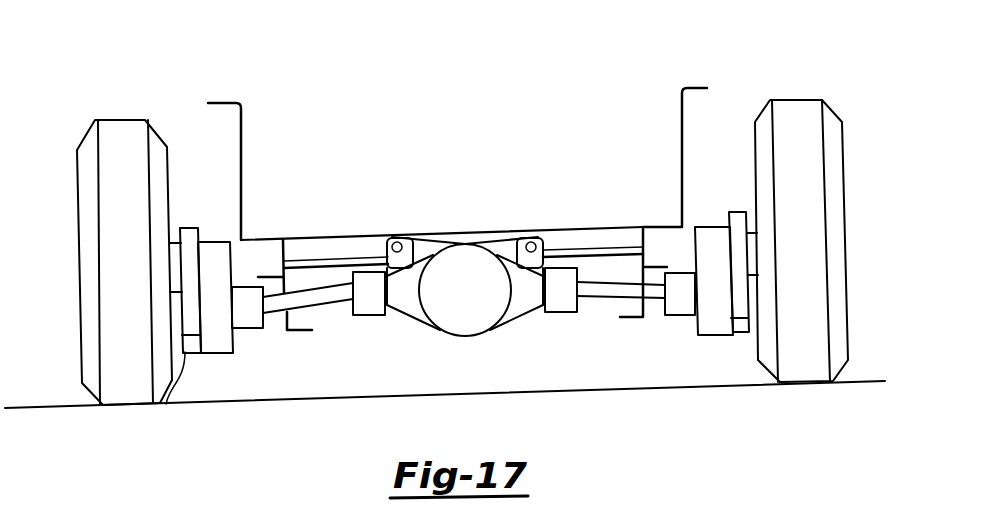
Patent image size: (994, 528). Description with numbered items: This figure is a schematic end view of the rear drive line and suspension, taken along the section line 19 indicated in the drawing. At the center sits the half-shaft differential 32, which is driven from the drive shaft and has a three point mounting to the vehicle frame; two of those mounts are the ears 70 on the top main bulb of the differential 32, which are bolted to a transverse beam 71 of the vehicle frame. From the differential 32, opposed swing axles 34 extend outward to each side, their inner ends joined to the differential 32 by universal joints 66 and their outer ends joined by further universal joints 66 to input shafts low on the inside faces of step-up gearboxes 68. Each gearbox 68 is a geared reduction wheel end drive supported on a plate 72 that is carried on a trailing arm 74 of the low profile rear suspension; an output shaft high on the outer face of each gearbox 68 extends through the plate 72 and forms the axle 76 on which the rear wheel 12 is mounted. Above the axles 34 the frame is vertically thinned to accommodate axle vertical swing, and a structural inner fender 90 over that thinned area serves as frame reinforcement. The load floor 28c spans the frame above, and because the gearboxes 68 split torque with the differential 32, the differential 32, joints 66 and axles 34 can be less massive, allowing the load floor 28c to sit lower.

The rear wheel 12 is at (78, 241).
The section line 19 is at (168, 62).
The load floor 28c is at (633, 227).
The half-shaft differential 32 is at (463, 272).
The swing axle 34 is at (317, 302).
The universal joint 66 is at (243, 287).
The step-up gearbox 68 is at (223, 345).
The ear 70 is at (418, 248).
The transverse beam 71 is at (323, 250).
The plate 72 is at (186, 230).
The trailing arm 74 is at (164, 404).
The axle 76 is at (173, 247).
The structural inner fender 90 is at (241, 155).